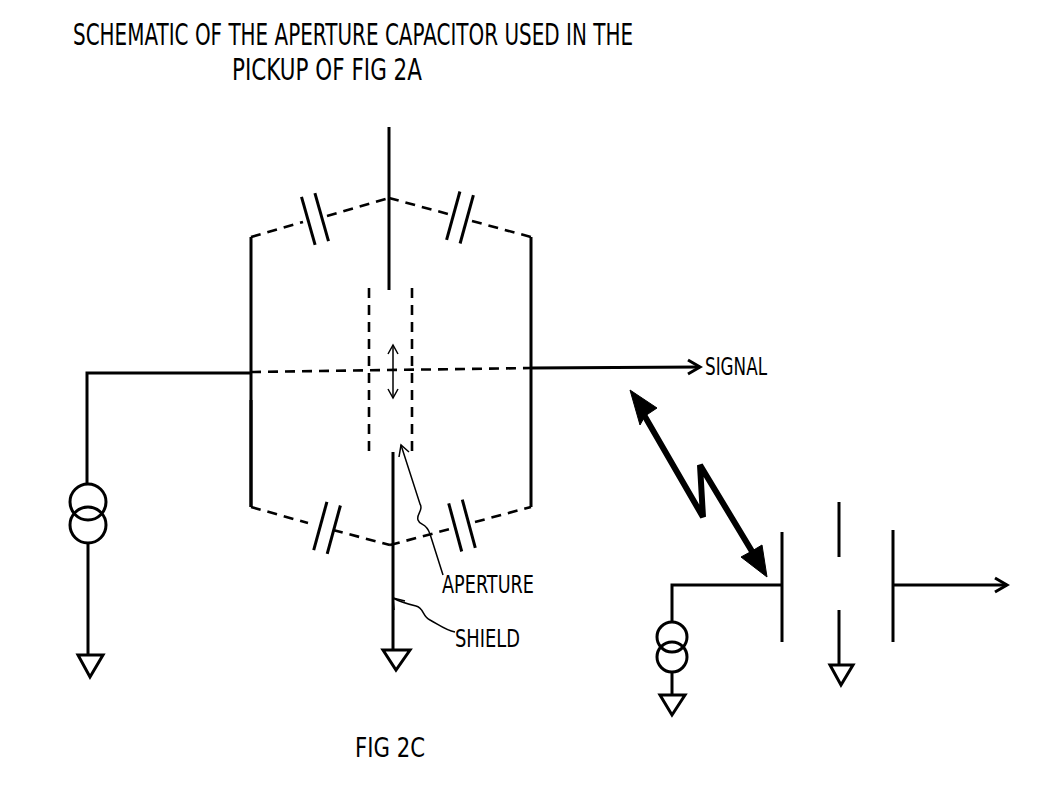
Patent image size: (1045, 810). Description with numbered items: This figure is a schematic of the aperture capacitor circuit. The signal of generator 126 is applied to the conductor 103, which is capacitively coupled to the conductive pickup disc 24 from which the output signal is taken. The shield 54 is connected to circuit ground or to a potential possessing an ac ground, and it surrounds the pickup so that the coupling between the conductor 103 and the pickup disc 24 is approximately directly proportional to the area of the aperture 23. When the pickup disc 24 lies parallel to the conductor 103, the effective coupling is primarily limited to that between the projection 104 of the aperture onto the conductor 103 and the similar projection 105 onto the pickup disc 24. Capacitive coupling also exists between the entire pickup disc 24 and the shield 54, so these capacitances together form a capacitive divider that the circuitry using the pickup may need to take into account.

The shield 54 is at (389, 165).
The pickup disc 24 is at (532, 270).
The aperture 23 is at (393, 365).
The conductor 103 is at (251, 470).
The projection of the aperture onto the conductor 104 is at (369, 412).
The projection onto the pickup disc 105 is at (412, 412).
The generator 126 is at (108, 505).